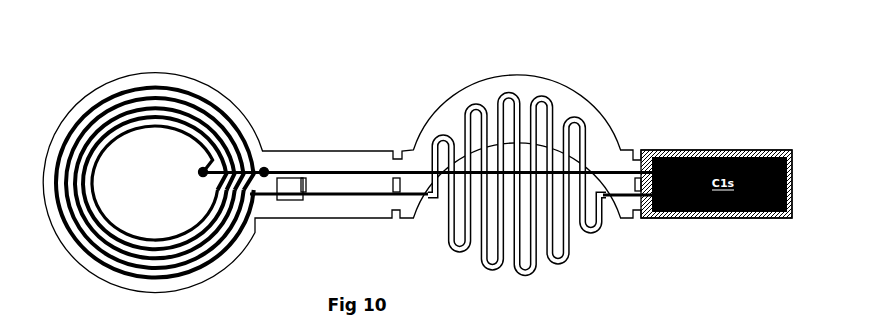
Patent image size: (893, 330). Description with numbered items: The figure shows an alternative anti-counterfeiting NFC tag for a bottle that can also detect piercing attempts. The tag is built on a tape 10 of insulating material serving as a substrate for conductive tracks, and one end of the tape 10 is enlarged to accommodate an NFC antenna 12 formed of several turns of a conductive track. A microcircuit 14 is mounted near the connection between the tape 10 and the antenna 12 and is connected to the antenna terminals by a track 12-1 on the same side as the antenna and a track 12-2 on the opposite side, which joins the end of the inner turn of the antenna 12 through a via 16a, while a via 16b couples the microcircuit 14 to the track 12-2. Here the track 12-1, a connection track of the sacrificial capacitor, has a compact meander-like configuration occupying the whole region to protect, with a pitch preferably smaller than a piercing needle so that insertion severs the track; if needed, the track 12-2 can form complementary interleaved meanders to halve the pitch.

The tape 10 is at (340, 160).
The NFC antenna 12 is at (172, 89).
The track 12-1 is at (330, 197).
The track 12-2 is at (377, 180).
The microcircuit 14 is at (282, 181).
The via 16a is at (199, 176).
The via 16b is at (265, 167).